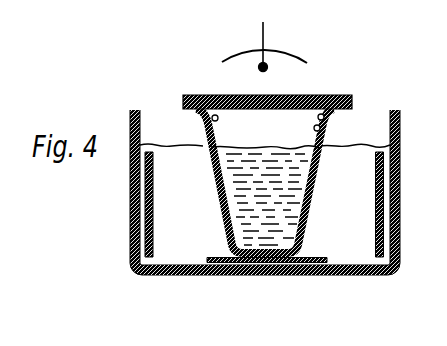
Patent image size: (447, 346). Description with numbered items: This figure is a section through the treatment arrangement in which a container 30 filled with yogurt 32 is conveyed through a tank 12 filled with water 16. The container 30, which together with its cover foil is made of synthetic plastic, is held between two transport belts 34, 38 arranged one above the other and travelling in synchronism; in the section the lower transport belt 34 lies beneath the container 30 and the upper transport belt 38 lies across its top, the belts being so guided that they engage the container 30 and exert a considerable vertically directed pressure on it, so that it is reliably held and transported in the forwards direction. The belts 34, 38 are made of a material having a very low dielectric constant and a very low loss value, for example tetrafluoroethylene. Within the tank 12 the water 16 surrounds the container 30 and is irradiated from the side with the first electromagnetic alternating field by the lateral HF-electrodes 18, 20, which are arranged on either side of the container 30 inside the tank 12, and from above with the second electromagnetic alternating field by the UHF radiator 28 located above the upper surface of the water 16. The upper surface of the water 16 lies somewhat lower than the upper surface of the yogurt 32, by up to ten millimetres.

The tank 12 is at (400, 160).
The water 16 is at (181, 261).
The lateral HF-electrode 18 is at (378, 220).
The lateral HF-electrode 20 is at (147, 181).
The UHF radiator 28 is at (291, 54).
The container 30 is at (215, 177).
The yogurt 32 is at (307, 188).
The transport belt 34 is at (216, 257).
The transport belt 38 is at (326, 95).